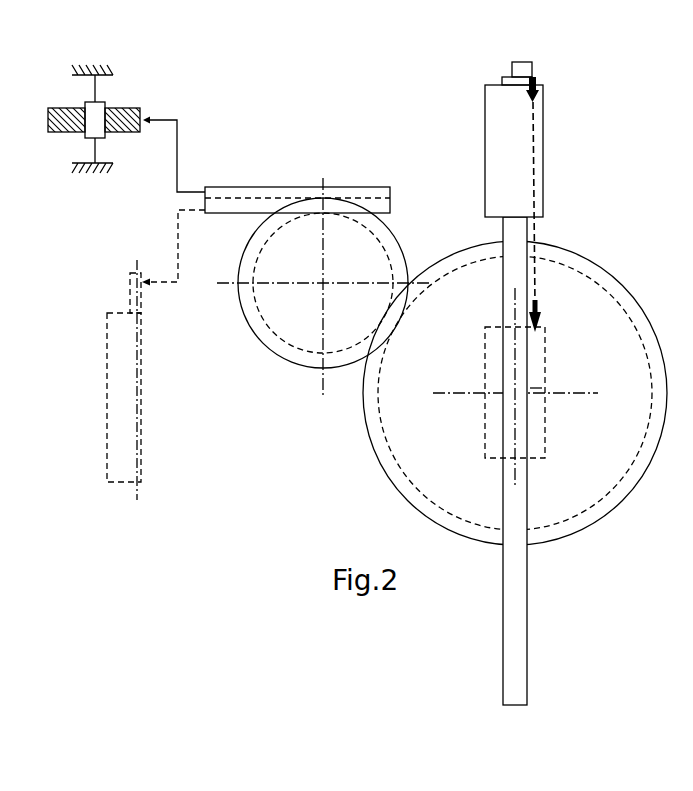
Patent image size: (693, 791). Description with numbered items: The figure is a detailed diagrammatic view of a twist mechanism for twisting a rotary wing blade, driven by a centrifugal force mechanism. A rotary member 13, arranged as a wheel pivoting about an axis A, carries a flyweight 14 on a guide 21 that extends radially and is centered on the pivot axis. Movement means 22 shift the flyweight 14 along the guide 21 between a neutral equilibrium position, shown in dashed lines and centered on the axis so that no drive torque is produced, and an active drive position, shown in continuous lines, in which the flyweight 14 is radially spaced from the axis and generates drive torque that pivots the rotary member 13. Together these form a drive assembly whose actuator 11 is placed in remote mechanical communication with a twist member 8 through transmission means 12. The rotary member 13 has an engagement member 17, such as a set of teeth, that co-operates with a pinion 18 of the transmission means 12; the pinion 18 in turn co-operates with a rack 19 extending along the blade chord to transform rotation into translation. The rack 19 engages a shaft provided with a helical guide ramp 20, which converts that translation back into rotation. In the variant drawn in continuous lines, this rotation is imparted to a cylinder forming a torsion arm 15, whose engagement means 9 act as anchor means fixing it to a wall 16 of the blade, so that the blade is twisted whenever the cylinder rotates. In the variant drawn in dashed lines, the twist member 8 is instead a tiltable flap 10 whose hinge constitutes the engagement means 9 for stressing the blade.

The twist member 8 is at (106, 267).
The engagement means 9 is at (95, 92).
The tiltable flap 10 is at (108, 428).
The actuator 11 is at (515, 428).
The transmission means 12 is at (312, 453).
The rotary member 13 is at (445, 447).
The flyweight 14 is at (542, 147).
The torsion arm 15 is at (105, 135).
The wall of the blade 16 is at (105, 54).
The engagement member 17 is at (567, 518).
The pinion 18 is at (270, 350).
The rack 19 is at (280, 187).
The helical guide ramp 20 is at (58, 133).
The guide 21 is at (530, 625).
The movement means 22 is at (537, 67).